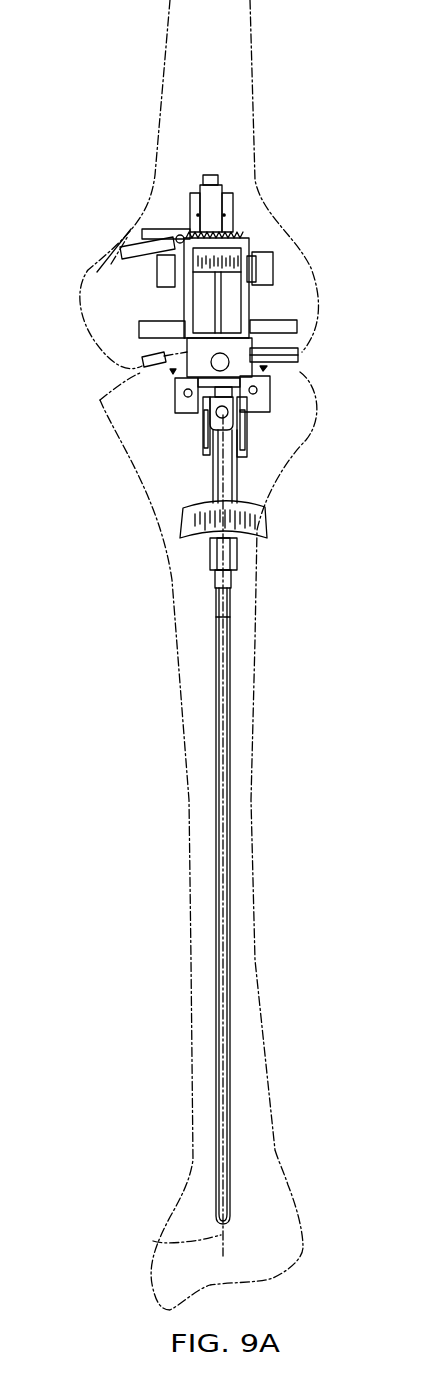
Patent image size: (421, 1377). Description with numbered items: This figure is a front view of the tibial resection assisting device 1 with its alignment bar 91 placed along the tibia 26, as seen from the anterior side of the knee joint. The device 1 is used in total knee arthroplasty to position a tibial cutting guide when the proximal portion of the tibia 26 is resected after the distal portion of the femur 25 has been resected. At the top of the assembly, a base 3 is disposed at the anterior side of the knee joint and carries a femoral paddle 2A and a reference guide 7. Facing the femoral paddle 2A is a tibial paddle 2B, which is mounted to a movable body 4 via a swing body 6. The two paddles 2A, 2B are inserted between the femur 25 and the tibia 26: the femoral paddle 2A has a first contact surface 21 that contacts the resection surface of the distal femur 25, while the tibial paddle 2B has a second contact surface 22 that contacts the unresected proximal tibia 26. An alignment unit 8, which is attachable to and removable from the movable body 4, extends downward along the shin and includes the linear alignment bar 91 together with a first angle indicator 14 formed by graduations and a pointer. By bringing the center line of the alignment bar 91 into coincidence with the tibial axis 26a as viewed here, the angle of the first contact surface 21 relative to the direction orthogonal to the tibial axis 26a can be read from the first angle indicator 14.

The tibial resection assisting device 1 is at (181, 461).
The femoral paddle 2A is at (288, 321).
The tibial paddle 2B is at (300, 356).
The base 3 is at (240, 232).
The movable body 4 is at (200, 299).
The swing body 6 is at (258, 373).
The reference guide 7 is at (185, 418).
The alignment unit 8 is at (217, 816).
The first angle indicator 14 is at (192, 550).
The first contact surface 21 is at (150, 322).
The second contact surface 22 is at (150, 373).
The femur 25 is at (222, 93).
The tibia 26 is at (240, 871).
The tibial axis 26a is at (153, 1241).
The alignment bar 91 is at (216, 918).